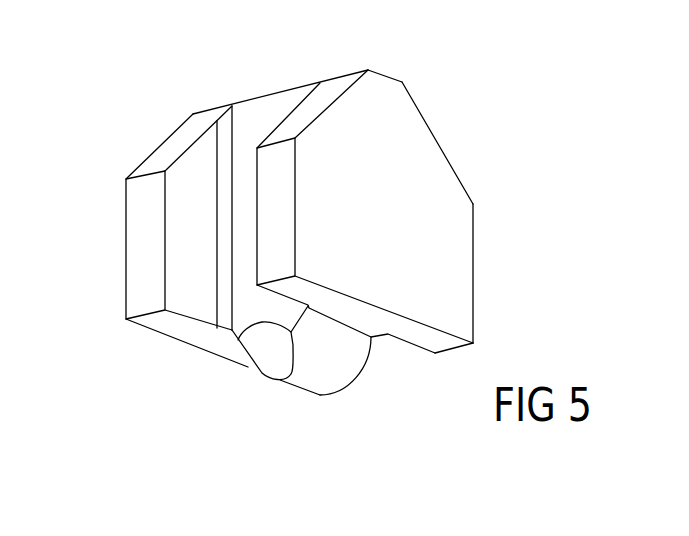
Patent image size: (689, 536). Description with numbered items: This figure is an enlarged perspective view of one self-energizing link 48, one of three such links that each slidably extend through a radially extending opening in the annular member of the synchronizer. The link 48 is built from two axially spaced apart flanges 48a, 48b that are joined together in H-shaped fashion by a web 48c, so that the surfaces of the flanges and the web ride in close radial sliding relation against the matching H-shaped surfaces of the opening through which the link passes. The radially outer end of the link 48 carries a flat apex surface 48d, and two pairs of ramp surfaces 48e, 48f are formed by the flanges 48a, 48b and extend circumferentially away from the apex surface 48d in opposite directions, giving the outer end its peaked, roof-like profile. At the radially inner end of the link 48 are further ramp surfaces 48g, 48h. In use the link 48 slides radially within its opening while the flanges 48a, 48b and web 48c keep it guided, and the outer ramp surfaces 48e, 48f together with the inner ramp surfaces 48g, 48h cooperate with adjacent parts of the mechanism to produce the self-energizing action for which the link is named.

The self-energizing link 48 is at (487, 197).
The flange 48a is at (126, 283).
The flange 48b is at (473, 272).
The web 48c is at (232, 283).
The flat apex surface 48d is at (400, 81).
The ramp surface 48e is at (442, 150).
The ramp surface 48f is at (318, 82).
The ramp surface 48g is at (248, 356).
The ramp surface 48h is at (371, 338).